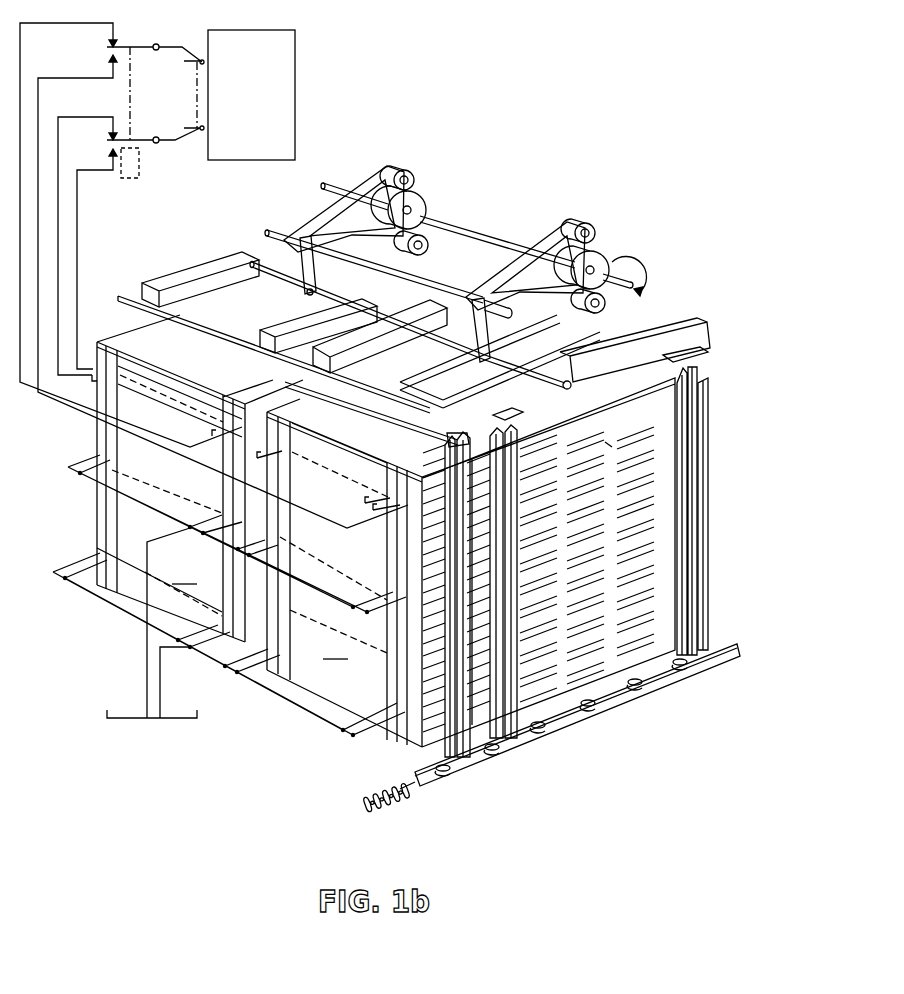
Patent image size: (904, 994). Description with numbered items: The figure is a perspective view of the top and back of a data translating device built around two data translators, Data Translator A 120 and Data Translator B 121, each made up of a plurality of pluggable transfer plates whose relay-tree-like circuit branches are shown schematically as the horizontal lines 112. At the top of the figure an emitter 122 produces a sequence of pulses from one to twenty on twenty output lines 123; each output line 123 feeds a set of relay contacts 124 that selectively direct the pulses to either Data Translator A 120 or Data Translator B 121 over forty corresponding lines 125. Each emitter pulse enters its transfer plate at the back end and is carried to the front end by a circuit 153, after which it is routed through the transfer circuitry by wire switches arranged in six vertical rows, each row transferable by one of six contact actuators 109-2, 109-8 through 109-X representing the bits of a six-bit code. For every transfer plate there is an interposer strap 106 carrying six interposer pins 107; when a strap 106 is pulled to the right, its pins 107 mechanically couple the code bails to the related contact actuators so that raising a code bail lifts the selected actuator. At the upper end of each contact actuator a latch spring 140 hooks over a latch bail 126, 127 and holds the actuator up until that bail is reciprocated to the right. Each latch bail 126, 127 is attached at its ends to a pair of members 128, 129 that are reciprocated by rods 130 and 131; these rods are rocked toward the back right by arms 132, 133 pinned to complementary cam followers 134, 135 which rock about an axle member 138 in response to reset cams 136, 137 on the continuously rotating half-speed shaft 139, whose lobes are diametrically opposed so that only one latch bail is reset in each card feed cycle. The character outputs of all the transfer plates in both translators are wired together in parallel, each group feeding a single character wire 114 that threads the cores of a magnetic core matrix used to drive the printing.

The emitter 122 is at (296, 81).
The output lines 123 is at (203, 60).
The relay contacts 124 is at (115, 43).
The lines 125 is at (37, 211).
The Data Translator B 121 is at (200, 478).
The Data Translator A 120 is at (369, 573).
The character wire 114 is at (140, 690).
The horizontal lines 112 is at (620, 540).
The contact actuator 109-2 is at (440, 753).
The contact actuator 109-8 is at (510, 747).
The contact actuator 109-X is at (697, 643).
The circuit 153 is at (608, 443).
The interposer strap 106 is at (603, 712).
The interposer pins 107 is at (445, 772).
The members 129 is at (185, 272).
The members 128 is at (340, 380).
The rod 130 is at (522, 366).
The latch bail 127 is at (212, 330).
The latch bail 126 is at (410, 424).
The latch spring 140 is at (447, 438).
The axle member 138 is at (272, 229).
The rod 131 is at (340, 293).
The arm 133 is at (306, 296).
The arm 132 is at (487, 362).
The shaft 139 is at (473, 228).
The cam follower 135 is at (372, 190).
The cam follower 134 is at (538, 237).
The reset cam 137 is at (430, 200).
The reset cam 136 is at (610, 257).